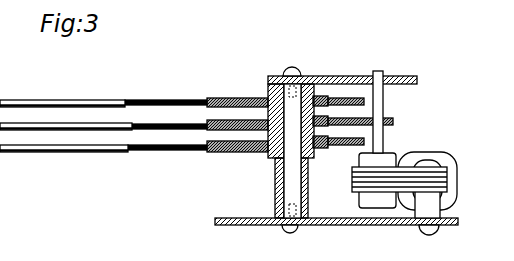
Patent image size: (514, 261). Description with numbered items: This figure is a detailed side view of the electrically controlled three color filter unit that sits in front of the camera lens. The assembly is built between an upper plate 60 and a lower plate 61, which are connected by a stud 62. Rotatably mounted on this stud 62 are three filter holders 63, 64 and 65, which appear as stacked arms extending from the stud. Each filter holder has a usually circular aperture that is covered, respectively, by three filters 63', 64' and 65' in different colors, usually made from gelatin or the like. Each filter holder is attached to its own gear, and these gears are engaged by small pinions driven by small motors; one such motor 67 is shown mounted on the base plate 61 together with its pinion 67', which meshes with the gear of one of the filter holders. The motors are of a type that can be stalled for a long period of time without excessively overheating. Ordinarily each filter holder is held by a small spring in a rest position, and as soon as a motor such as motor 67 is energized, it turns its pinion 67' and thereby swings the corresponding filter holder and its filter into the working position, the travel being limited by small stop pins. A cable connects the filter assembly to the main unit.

The upper plate 60 is at (391, 76).
The lower plate 61 is at (230, 218).
The stud 62 is at (288, 172).
The filter holder 63 is at (198, 153).
The filter holder 64 is at (200, 131).
The filter holder 65 is at (196, 109).
The filter 63' is at (64, 141).
The filter 64' is at (66, 119).
The filter 65' is at (62, 95).
The motor 67 is at (419, 185).
The pinion 67' is at (399, 112).